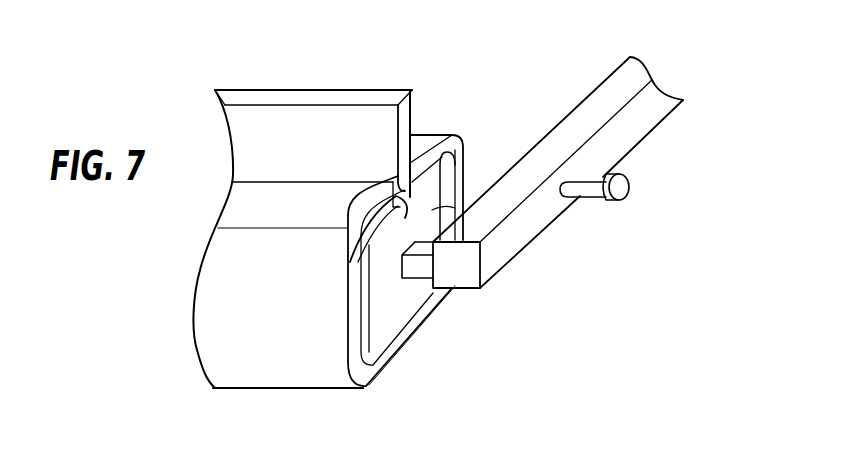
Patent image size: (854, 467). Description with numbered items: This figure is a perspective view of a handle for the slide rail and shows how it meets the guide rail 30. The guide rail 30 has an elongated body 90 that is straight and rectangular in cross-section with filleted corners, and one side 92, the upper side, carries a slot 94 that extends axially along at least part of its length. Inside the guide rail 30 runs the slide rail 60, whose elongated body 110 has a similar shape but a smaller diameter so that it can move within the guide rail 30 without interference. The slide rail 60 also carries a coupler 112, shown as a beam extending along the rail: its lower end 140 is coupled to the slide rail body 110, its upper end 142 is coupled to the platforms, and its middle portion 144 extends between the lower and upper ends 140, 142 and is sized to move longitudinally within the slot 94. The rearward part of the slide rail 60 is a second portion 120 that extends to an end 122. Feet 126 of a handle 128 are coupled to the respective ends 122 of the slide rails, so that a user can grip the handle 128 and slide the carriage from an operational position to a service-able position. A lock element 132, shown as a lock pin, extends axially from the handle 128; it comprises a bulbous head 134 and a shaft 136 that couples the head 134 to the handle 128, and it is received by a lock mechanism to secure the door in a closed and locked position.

The guide rail 30 is at (358, 390).
The slide rail 60 is at (438, 172).
The elongated body 90 is at (268, 365).
The side 92 is at (337, 198).
The slot 94 is at (399, 186).
The elongated body 110 is at (390, 322).
The coupler 112 is at (327, 88).
The second portion 120 is at (456, 176).
The end 122 is at (455, 205).
The feet 126 is at (422, 267).
The handle 128 is at (647, 110).
The lock element 132 is at (639, 211).
The bulbous head 134 is at (631, 188).
The shaft 136 is at (590, 192).
The lower end 140 is at (376, 232).
The upper end 142 is at (413, 103).
The middle portion 144 is at (413, 120).